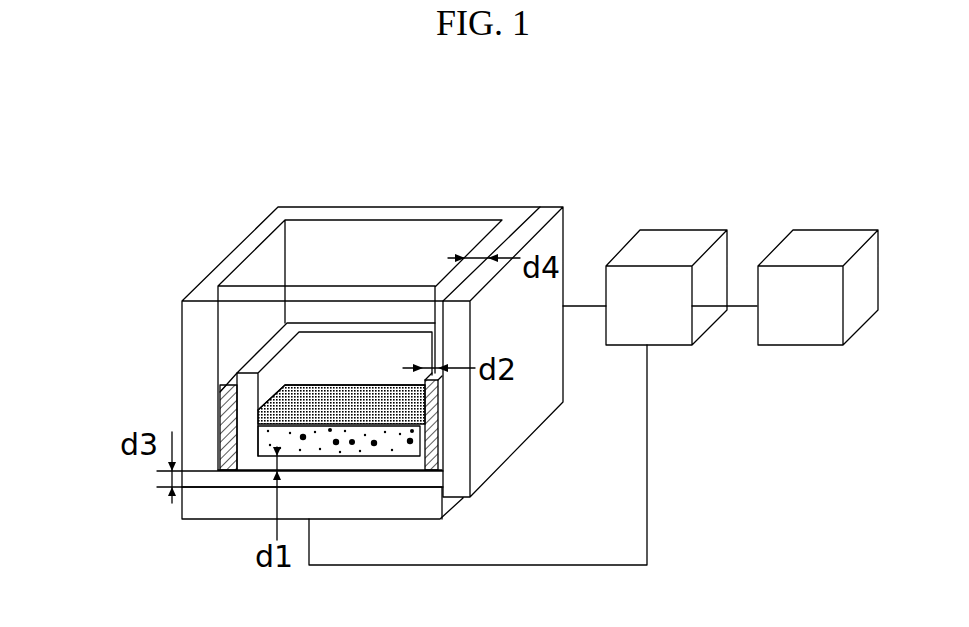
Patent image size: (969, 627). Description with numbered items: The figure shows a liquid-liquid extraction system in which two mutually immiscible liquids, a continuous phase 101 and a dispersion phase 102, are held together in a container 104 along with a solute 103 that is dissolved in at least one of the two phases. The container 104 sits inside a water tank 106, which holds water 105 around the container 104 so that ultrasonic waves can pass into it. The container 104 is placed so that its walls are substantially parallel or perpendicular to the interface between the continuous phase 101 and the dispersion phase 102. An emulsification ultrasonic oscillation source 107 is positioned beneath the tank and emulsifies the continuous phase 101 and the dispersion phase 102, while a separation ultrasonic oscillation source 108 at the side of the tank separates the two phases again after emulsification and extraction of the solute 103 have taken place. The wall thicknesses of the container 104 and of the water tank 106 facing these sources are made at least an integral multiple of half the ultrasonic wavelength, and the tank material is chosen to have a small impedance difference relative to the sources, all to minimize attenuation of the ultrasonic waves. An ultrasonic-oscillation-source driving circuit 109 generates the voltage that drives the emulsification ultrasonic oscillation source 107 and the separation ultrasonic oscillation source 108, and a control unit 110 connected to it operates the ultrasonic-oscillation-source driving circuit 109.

The continuous phase 101 is at (257, 437).
The dispersion phase 102 is at (282, 385).
The solute 103 is at (257, 410).
The container 104 is at (377, 327).
The water 105 is at (223, 466).
The water tank 106 is at (398, 207).
The emulsification ultrasonic oscillation source 107 is at (178, 507).
The separation ultrasonic oscillation source 108 is at (548, 207).
The ultrasonic-oscillation-source driving circuit 109 is at (678, 230).
The control unit 110 is at (829, 230).